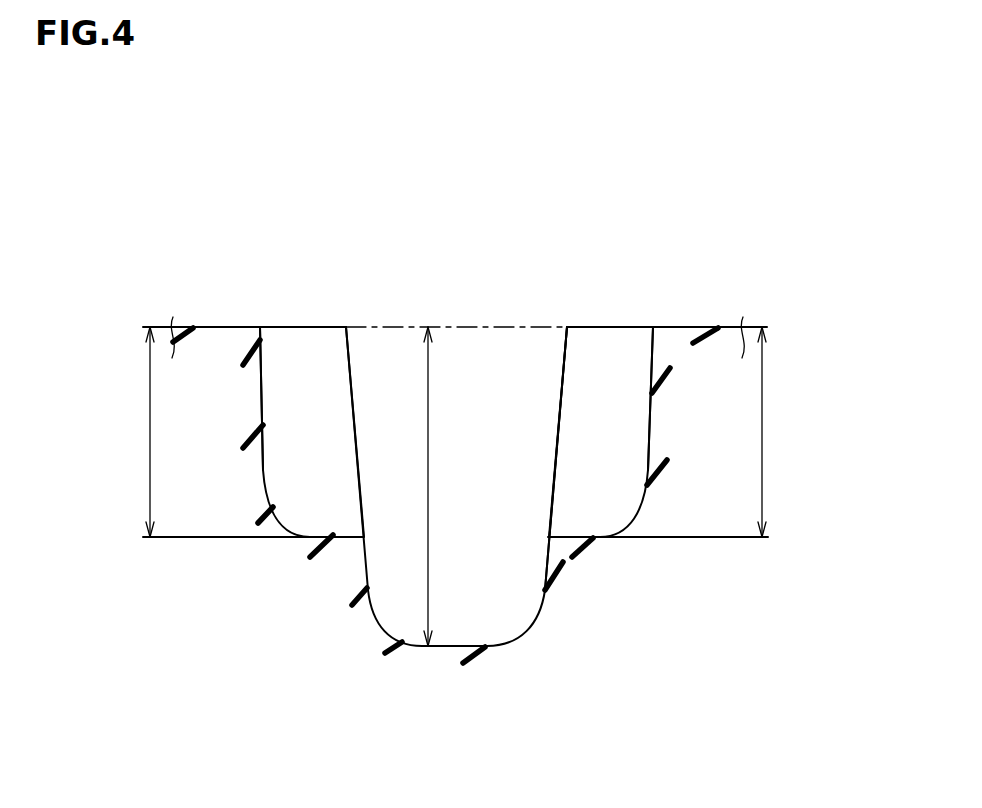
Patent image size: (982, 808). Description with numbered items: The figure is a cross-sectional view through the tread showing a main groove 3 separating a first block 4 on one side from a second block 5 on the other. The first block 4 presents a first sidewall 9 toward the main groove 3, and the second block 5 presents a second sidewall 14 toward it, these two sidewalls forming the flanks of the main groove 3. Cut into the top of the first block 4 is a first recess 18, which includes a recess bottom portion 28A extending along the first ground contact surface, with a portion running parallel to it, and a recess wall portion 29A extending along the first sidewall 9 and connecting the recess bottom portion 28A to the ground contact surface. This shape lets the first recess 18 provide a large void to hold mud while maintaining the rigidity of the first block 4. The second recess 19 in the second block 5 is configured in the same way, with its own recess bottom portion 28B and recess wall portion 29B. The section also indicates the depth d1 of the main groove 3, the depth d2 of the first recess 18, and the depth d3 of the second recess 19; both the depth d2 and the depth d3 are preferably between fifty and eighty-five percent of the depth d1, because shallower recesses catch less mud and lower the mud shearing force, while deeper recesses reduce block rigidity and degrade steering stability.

The main groove 3 is at (498, 477).
The first block 4 is at (214, 327).
The second block 5 is at (697, 327).
The first sidewall 9 is at (350, 375).
The second sidewall 14 is at (563, 372).
The first recess 18 is at (320, 501).
The second recess 19 is at (630, 501).
The recess bottom portion 28A is at (341, 537).
The recess bottom portion 28B is at (572, 537).
The recess wall portion 29A is at (262, 373).
The recess wall portion 29B is at (653, 372).
The depth of the main groove d1 is at (428, 592).
The depth of the first recess d2 is at (131, 432).
The depth of the second recess d3 is at (780, 432).